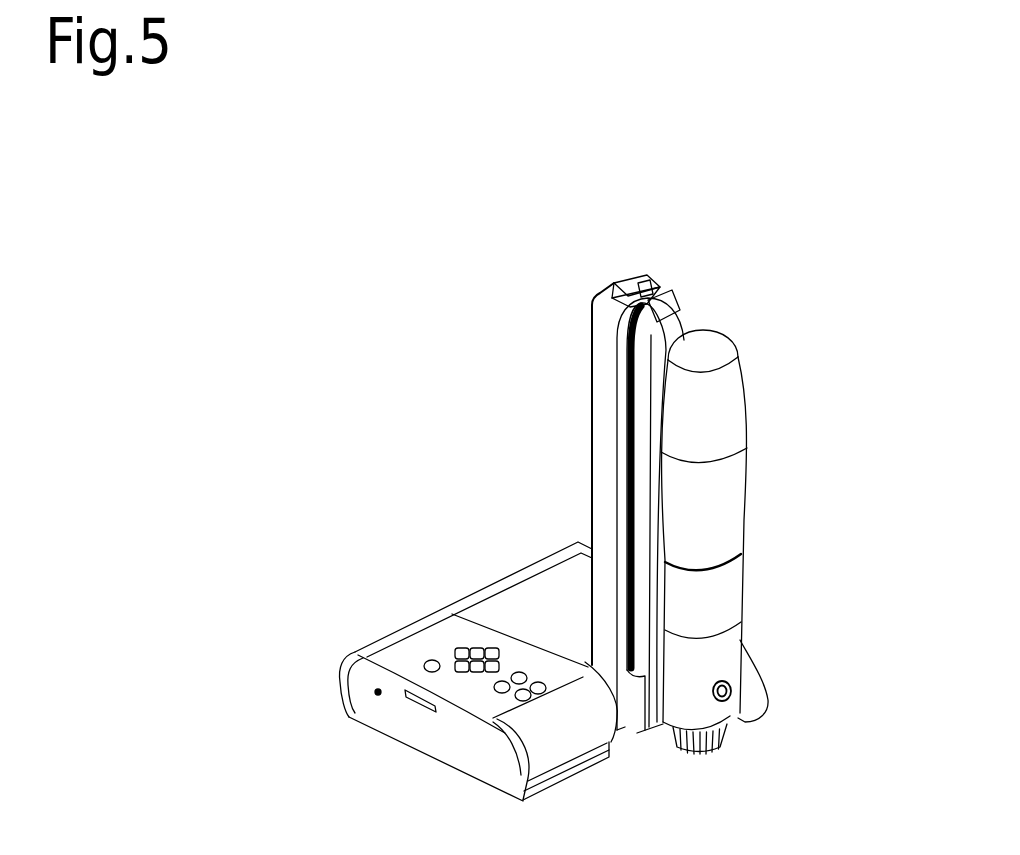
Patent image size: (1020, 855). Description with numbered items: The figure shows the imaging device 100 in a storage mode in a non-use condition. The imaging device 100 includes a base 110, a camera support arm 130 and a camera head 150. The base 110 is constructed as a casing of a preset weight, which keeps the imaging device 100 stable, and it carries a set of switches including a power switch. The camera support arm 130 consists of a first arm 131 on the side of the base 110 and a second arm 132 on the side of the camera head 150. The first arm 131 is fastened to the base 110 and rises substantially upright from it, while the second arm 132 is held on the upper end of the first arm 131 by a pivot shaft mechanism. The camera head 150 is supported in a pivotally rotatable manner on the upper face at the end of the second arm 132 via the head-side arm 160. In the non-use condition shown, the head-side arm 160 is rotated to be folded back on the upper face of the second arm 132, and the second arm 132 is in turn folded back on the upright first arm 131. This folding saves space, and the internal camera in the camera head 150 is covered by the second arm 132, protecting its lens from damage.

The imaging device 100 is at (300, 556).
The base 110 is at (408, 656).
The camera support arm 130 is at (386, 359).
The first arm 131 is at (603, 378).
The second arm 132 is at (636, 476).
The camera head 150 is at (725, 395).
The head-side arm 160 is at (723, 583).